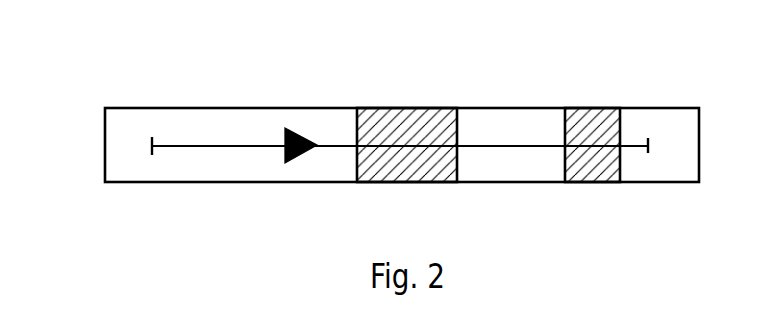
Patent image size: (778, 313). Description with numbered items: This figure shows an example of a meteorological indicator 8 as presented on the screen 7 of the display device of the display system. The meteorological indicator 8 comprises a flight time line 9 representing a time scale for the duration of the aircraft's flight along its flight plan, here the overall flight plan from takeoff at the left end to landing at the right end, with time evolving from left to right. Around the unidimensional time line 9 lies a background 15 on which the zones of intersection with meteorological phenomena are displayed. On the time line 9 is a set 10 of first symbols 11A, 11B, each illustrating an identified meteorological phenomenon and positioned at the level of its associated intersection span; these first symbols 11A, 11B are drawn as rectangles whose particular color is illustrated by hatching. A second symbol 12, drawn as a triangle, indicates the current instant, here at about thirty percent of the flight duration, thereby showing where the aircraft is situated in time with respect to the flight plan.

The screen 7 is at (82, 82).
The meteorological indicator 8 is at (145, 218).
The time line 9 is at (205, 145).
The set of first symbols 10 is at (488, 136).
The first symbol 11A is at (413, 178).
The first symbol 11B is at (591, 178).
The second symbol 12 is at (297, 160).
The background 15 is at (318, 114).